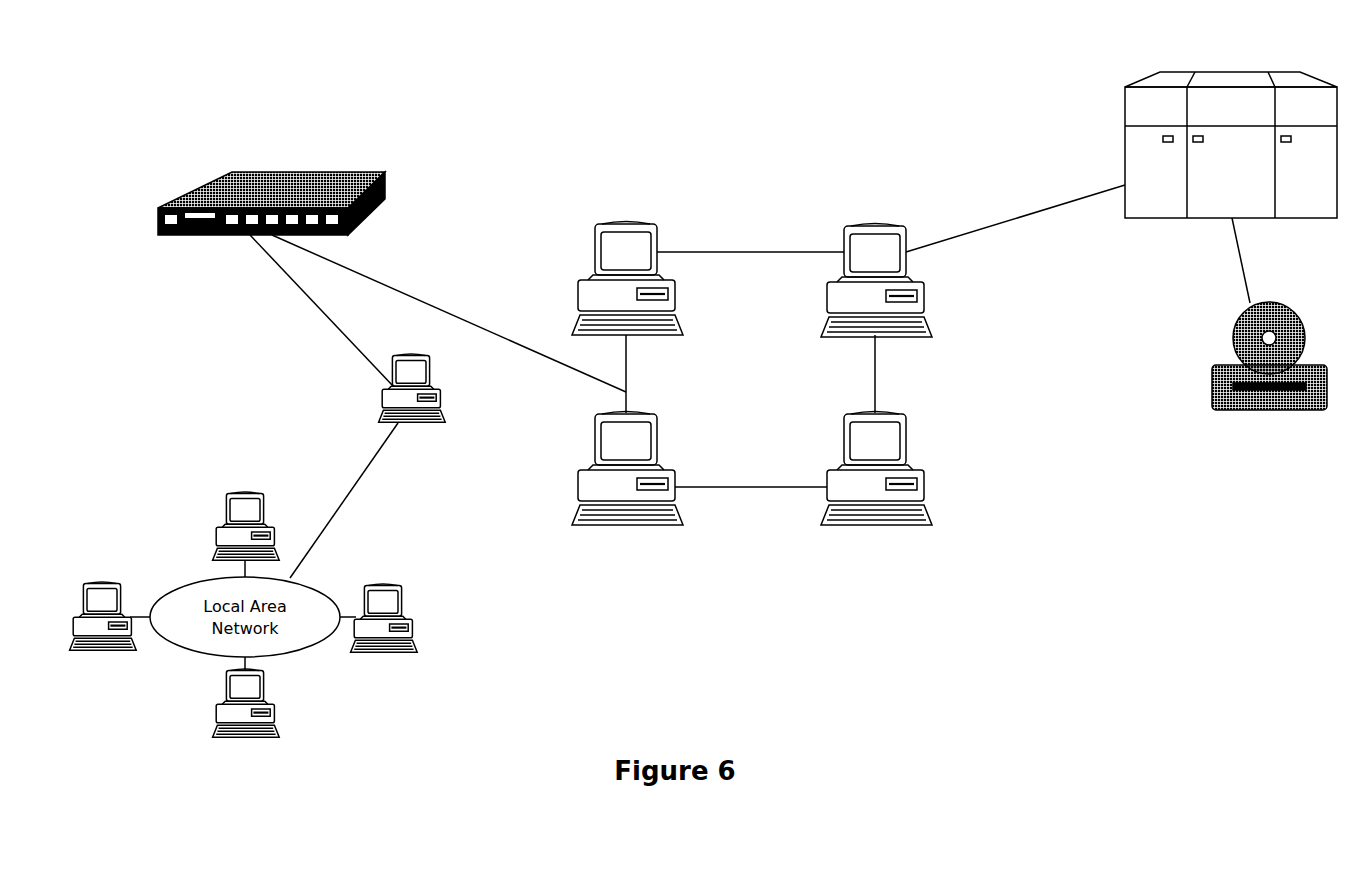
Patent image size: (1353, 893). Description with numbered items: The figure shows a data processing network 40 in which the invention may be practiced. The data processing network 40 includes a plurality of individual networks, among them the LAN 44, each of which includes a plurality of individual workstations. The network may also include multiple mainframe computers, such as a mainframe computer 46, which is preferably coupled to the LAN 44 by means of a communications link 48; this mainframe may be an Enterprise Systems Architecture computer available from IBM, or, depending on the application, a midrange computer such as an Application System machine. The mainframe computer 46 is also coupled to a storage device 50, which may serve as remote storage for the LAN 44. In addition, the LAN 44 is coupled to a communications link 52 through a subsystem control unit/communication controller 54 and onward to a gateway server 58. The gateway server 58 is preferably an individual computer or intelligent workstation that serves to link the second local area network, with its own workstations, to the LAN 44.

The data processing network 40 is at (727, 252).
The LAN 44 is at (750, 411).
The mainframe computer 46 is at (1122, 108).
The communications link 48 is at (1045, 206).
The storage device 50 is at (1212, 384).
The communications link 52 is at (403, 290).
The subsystem control unit/communication controller 54 is at (272, 172).
The gateway server 58 is at (441, 390).